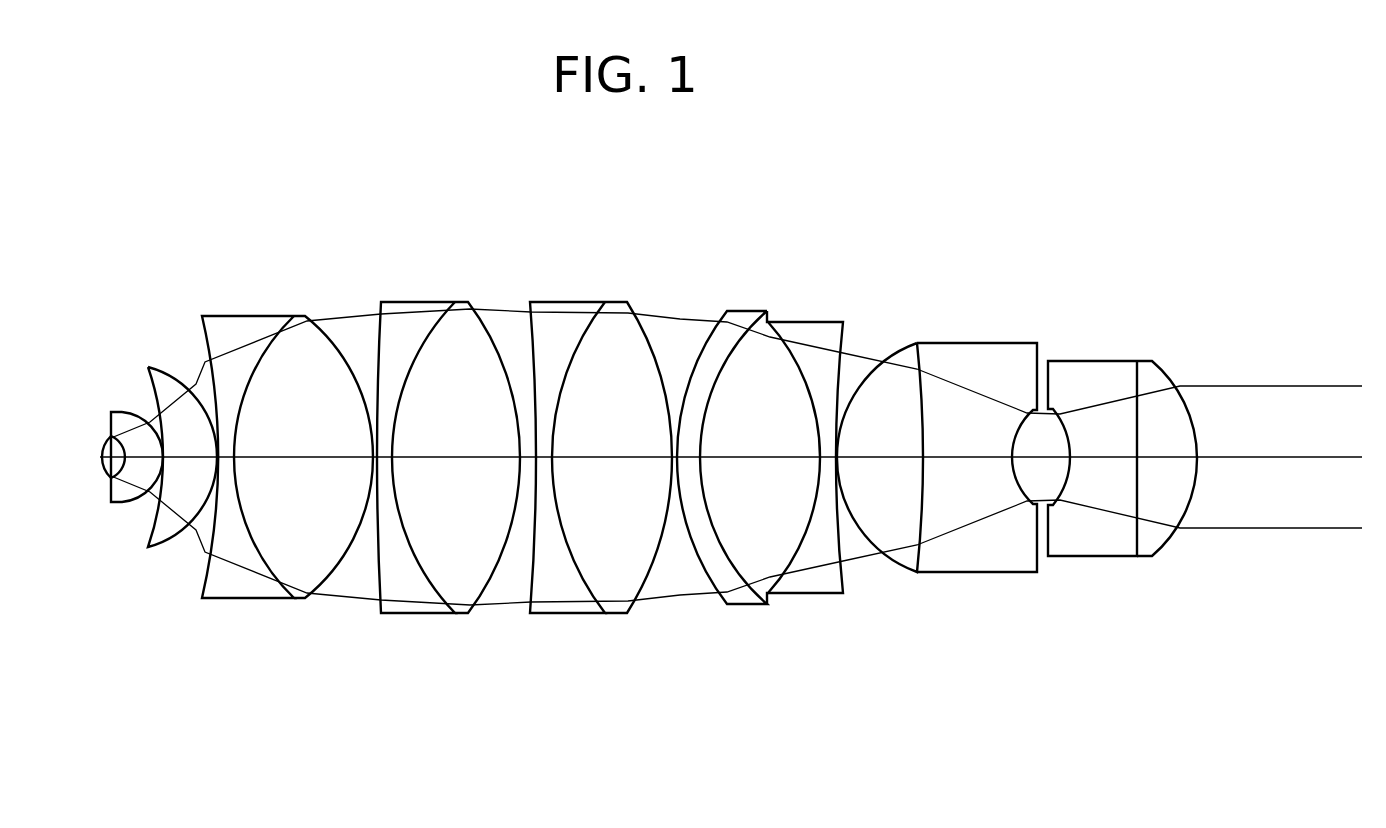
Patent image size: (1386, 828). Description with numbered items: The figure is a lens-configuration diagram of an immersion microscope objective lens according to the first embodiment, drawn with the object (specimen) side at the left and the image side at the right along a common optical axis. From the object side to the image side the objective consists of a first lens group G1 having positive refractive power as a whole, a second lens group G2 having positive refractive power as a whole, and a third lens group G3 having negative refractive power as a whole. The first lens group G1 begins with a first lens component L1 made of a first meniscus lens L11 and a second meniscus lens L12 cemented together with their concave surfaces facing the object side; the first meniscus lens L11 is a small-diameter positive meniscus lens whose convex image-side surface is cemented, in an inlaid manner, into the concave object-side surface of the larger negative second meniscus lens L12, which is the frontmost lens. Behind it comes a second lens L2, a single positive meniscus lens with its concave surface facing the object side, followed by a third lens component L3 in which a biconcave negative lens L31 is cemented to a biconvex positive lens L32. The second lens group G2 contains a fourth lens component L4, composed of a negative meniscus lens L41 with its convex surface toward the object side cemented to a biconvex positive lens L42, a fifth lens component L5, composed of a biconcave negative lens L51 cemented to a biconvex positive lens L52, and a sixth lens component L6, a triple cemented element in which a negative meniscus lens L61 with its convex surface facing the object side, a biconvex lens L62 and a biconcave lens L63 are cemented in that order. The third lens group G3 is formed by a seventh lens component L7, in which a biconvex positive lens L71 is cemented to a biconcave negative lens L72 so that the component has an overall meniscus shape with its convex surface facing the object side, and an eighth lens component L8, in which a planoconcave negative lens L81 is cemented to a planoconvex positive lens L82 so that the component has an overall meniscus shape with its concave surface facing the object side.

The first lens group G1 is at (100, 683).
The second lens group G2 is at (852, 683).
The third lens group G3 is at (858, 683).
The first lens component L1 is at (160, 321).
The first meniscus lens L11 is at (128, 417).
The second meniscus lens L12 is at (138, 427).
The second lens L2 is at (155, 368).
The third lens component L3 is at (343, 240).
The negative lens L31 is at (253, 323).
The positive lens L32 is at (317, 343).
The fourth lens component L4 is at (492, 240).
The negative lens L41 is at (413, 310).
The positive lens L42 is at (480, 327).
The fifth lens component L5 is at (673, 240).
The negative lens L51 is at (577, 310).
The positive lens L52 is at (637, 327).
The sixth lens component L6 is at (885, 242).
The negative meniscus lens L61 is at (745, 320).
The biconvex lens L62 is at (775, 335).
The biconcave lens L63 is at (822, 333).
The seventh lens component L7 is at (1032, 242).
The positive lens L71 is at (908, 345).
The negative lens L72 is at (1007, 352).
The eighth lens component L8 is at (1188, 284).
The negative lens L81 is at (1102, 367).
The positive lens L82 is at (1158, 368).